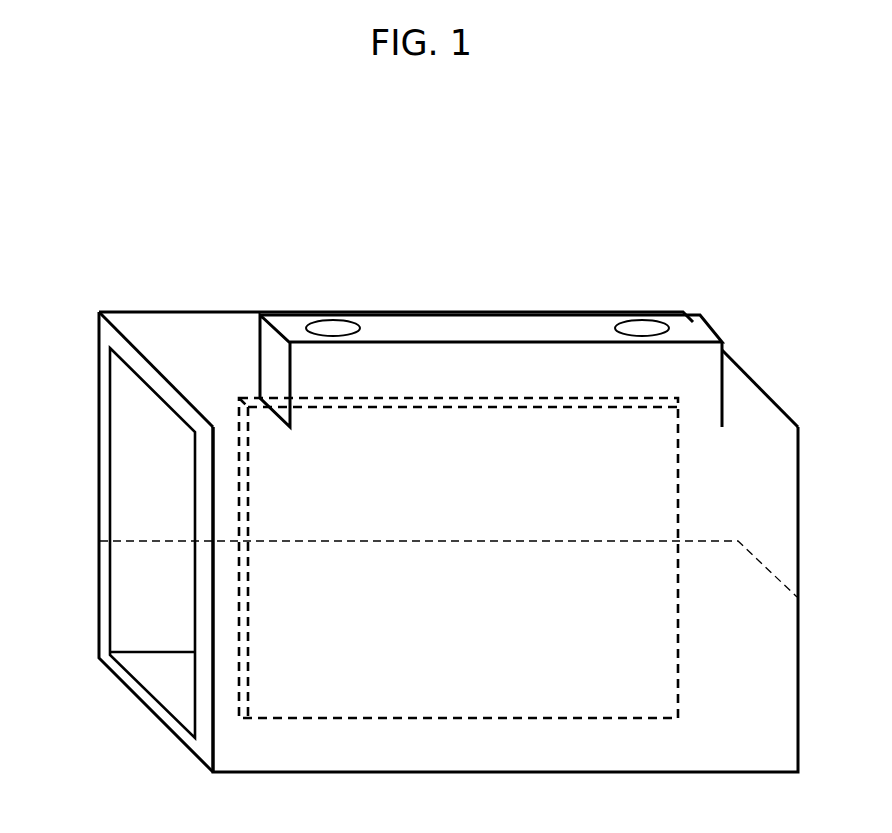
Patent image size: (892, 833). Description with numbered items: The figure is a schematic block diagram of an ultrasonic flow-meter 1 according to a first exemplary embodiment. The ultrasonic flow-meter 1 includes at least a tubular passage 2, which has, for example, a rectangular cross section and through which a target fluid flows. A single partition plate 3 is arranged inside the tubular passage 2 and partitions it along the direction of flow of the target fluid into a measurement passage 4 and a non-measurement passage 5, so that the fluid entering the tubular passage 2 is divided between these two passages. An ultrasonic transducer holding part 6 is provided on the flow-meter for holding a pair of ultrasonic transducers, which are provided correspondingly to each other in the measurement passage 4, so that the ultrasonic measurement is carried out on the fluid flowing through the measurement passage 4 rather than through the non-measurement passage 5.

The ultrasonic flow-meter 1 is at (504, 273).
The tubular passage 2 is at (151, 404).
The partition plate 3 is at (795, 383).
The measurement passage 4 is at (797, 597).
The non-measurement passage 5 is at (213, 482).
The ultrasonic transducer holding part 6 is at (703, 320).